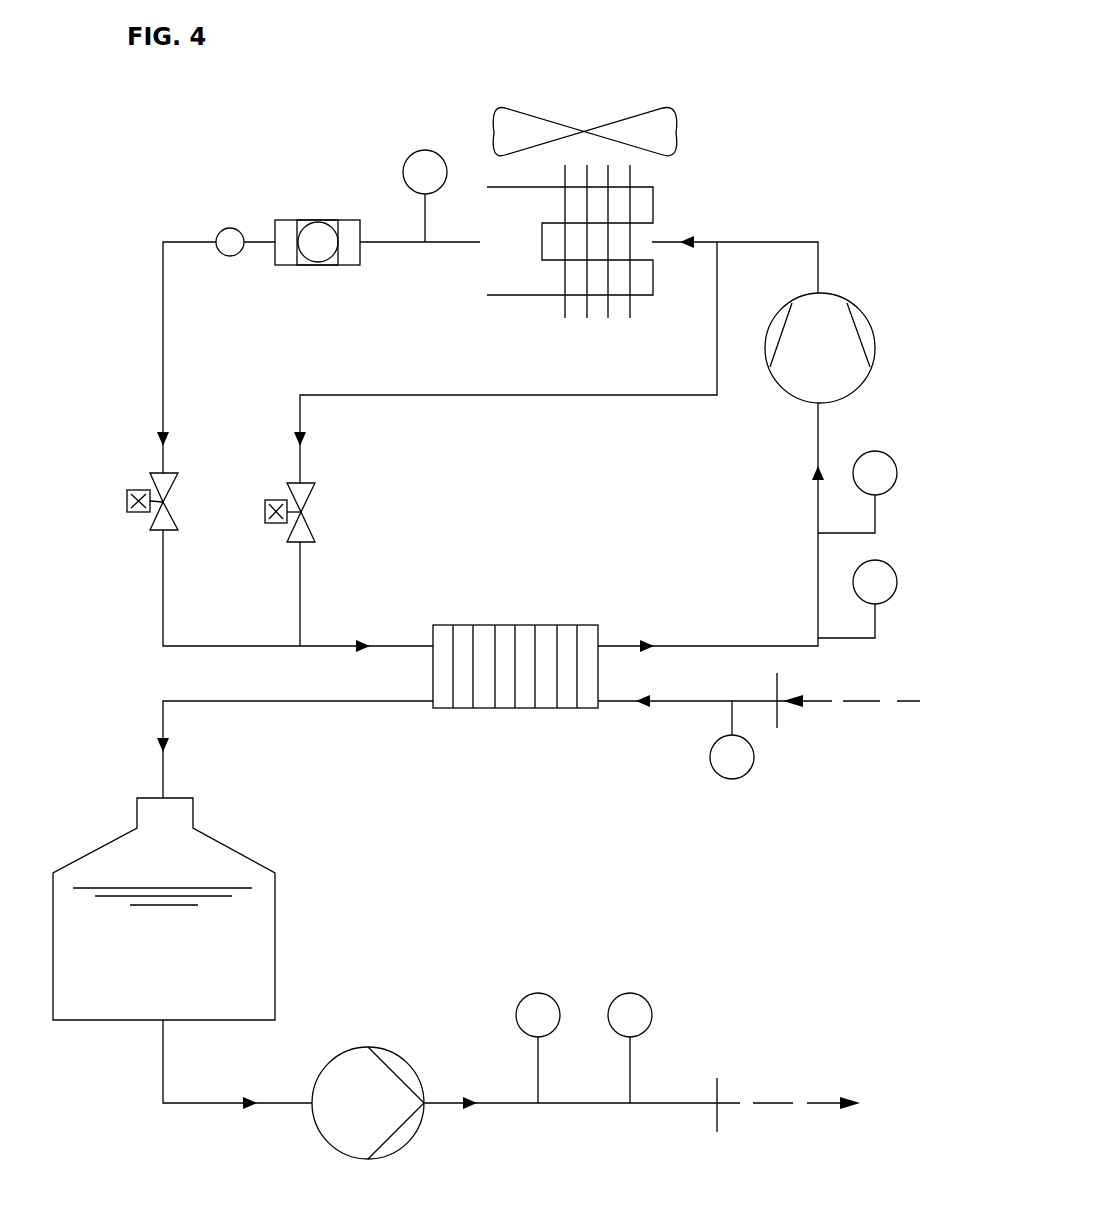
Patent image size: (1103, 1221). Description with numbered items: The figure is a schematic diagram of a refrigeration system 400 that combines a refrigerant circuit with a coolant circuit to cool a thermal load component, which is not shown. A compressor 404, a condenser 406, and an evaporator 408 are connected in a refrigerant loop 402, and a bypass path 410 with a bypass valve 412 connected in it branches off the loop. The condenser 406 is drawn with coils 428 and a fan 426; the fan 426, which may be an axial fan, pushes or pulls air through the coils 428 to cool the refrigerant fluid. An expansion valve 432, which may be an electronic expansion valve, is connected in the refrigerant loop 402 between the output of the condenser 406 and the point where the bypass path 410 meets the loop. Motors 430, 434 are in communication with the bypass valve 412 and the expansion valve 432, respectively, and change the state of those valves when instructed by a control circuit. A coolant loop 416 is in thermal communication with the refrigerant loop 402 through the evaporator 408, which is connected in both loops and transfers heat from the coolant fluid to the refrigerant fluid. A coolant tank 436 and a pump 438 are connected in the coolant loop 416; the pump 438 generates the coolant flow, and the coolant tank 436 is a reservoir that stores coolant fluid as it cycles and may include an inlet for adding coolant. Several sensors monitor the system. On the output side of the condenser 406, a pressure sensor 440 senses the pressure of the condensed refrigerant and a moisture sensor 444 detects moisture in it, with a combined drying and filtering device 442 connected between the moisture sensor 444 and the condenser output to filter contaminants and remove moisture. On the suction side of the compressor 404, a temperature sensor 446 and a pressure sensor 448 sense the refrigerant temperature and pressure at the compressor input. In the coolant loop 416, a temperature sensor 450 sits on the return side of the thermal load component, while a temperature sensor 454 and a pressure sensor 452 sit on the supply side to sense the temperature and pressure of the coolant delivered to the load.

The refrigeration system 400 is at (745, 78).
The refrigerant loop 402 is at (792, 240).
The compressor 404 is at (875, 350).
The condenser 406 is at (698, 158).
The evaporator 408 is at (527, 623).
The bypass path 410 is at (445, 398).
The bypass valve 412 is at (305, 502).
The coolant loop 416 is at (333, 702).
The fan 426 is at (558, 125).
The coils 428 is at (525, 250).
The motor 430 is at (267, 500).
The expansion valve 432 is at (172, 470).
The motor 434 is at (137, 513).
The coolant tank 436 is at (227, 848).
The pump 438 is at (397, 1057).
The pressure sensor 440 is at (423, 150).
The combined drying and filtering device 442 is at (333, 222).
The moisture sensor 444 is at (227, 227).
The temperature sensor 446 is at (882, 603).
The pressure sensor 448 is at (893, 487).
The temperature sensor 450 is at (745, 778).
The pressure sensor 452 is at (525, 995).
The temperature sensor 454 is at (650, 1030).